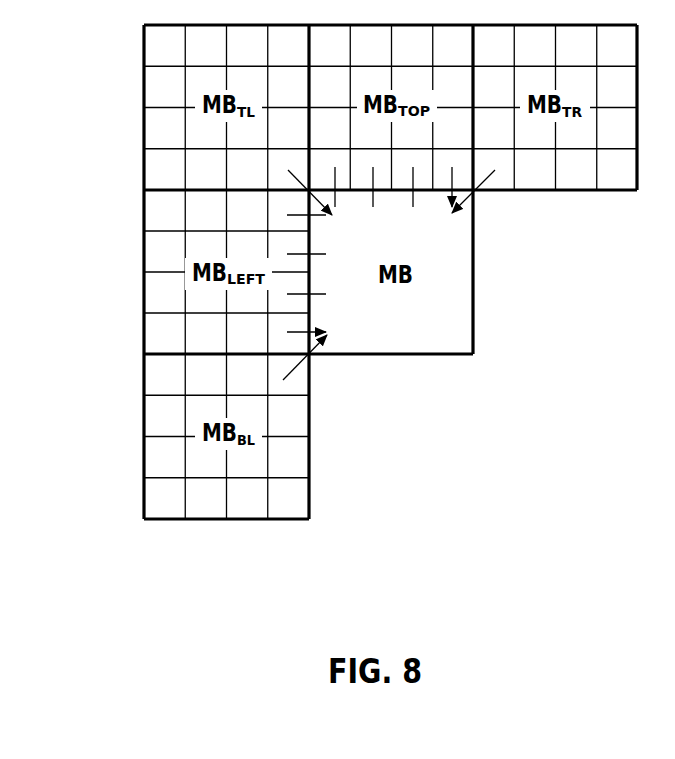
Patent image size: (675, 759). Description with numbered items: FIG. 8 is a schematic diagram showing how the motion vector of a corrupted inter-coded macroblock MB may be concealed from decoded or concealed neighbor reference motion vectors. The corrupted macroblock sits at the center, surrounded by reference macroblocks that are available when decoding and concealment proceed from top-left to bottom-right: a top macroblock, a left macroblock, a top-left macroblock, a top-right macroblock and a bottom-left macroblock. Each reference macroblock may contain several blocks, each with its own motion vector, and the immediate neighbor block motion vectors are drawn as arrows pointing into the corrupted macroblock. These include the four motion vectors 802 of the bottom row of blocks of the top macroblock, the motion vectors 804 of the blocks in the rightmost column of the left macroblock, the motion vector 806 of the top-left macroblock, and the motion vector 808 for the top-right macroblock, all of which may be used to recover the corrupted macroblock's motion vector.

The motion vectors of the bottom row of blocks of the top macroblock 802 is at (452, 173).
The motion vectors of the rightmost column of blocks in the left macroblock 804 is at (298, 332).
The motion vector of the top-left macroblock 806 is at (293, 178).
The motion vector for the top-right macroblock 808 is at (297, 367).